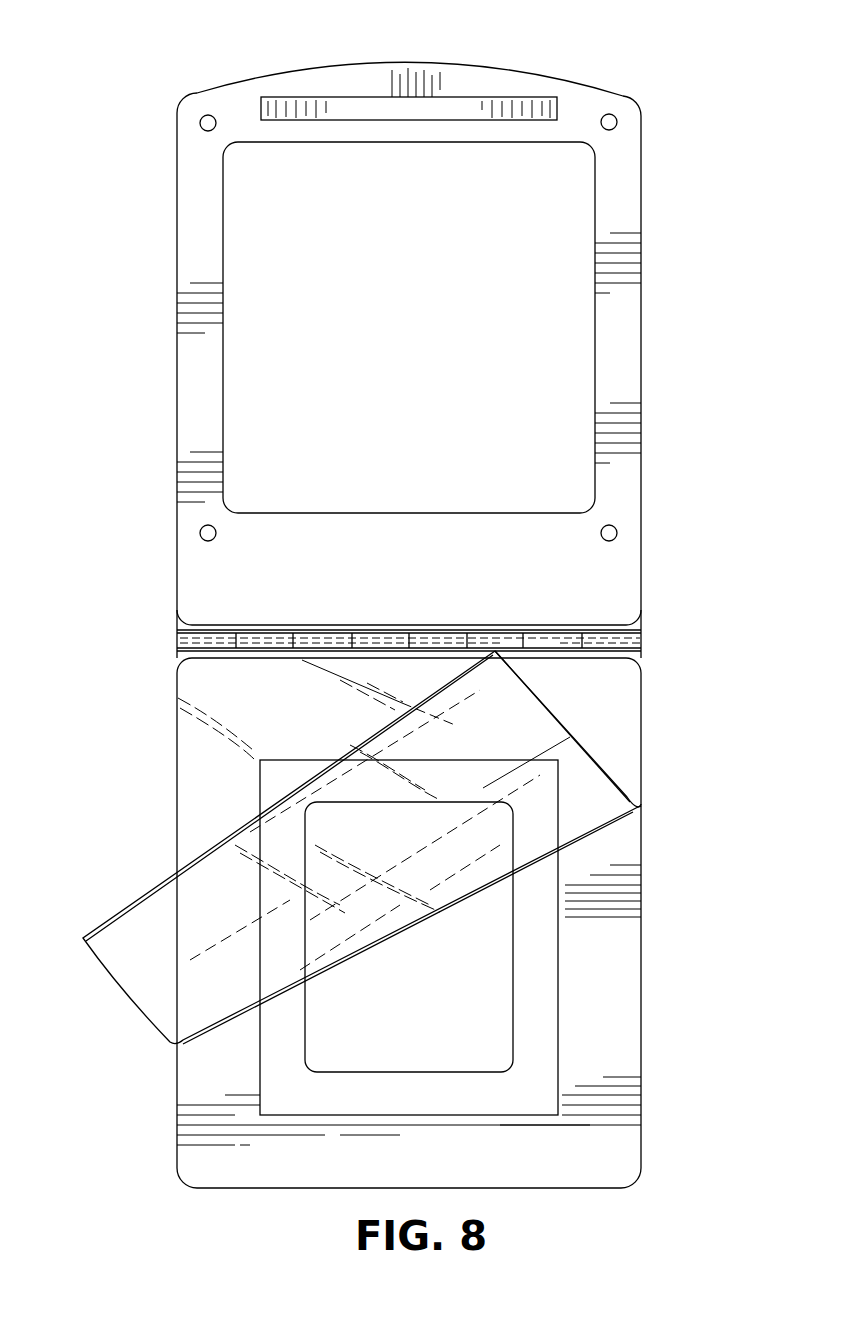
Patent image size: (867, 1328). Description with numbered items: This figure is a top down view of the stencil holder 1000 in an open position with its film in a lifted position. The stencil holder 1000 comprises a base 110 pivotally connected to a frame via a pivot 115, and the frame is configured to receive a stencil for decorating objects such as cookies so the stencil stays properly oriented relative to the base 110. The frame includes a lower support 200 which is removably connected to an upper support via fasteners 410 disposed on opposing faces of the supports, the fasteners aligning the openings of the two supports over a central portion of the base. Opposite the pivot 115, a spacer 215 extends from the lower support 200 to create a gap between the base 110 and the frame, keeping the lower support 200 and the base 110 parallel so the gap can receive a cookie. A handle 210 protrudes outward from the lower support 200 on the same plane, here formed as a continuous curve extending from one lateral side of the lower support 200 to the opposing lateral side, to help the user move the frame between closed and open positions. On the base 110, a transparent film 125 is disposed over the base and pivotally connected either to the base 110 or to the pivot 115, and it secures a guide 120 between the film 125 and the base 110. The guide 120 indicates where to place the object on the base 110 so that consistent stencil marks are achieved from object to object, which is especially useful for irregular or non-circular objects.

The stencil holder 1000 is at (672, 104).
The lower support 200 is at (197, 210).
The handle 210 is at (413, 64).
The spacer 215 is at (544, 97).
The fasteners 410 is at (210, 114).
The pivot 115 is at (642, 645).
The base 110 is at (613, 1155).
The guide 120 is at (533, 1005).
The film 125 is at (137, 922).